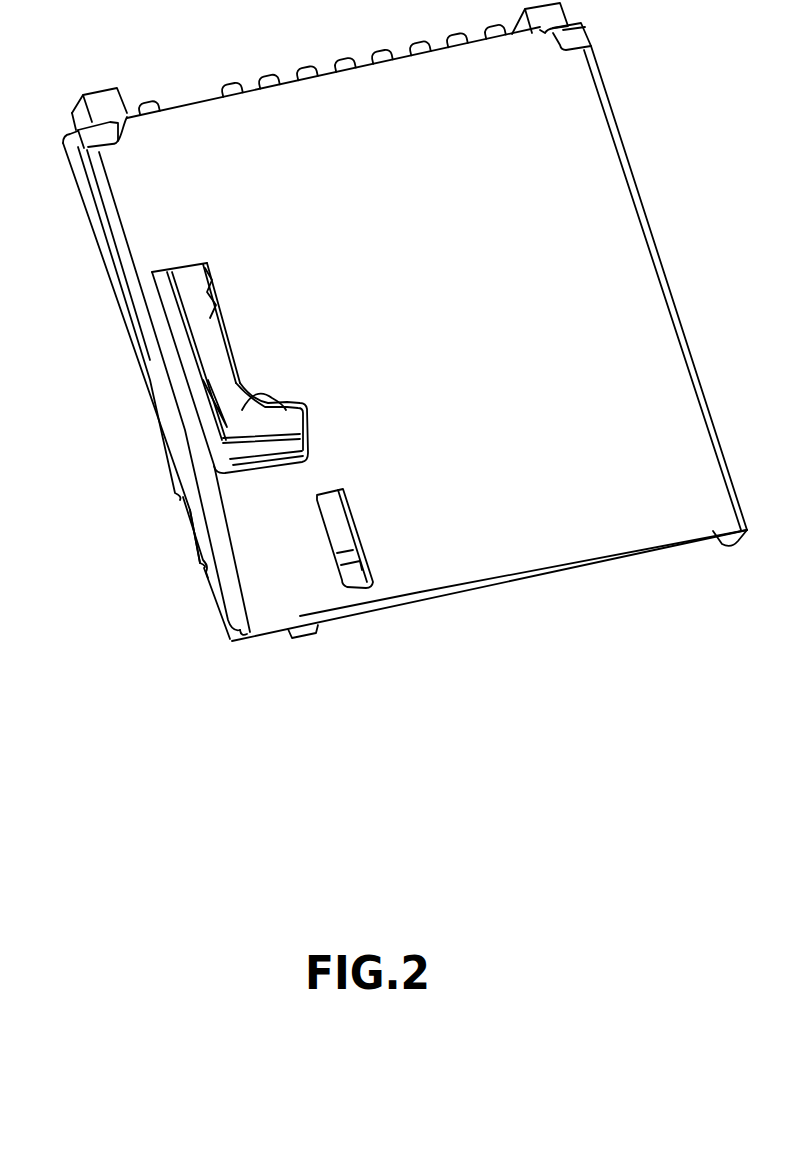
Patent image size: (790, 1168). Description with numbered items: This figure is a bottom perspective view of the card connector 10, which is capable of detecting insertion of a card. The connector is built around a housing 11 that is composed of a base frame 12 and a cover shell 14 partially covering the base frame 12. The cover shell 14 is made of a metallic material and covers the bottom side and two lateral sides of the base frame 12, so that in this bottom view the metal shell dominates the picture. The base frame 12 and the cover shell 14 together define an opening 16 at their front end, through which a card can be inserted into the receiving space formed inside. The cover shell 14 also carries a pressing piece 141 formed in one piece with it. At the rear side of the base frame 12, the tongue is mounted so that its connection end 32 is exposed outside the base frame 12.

The card connector 10 is at (198, 645).
The housing 11 is at (207, 593).
The base frame 12 is at (317, 631).
The cover shell 14 is at (237, 522).
The pressing piece 141 is at (233, 435).
The opening 16 is at (543, 578).
The connection end 32 is at (164, 106).